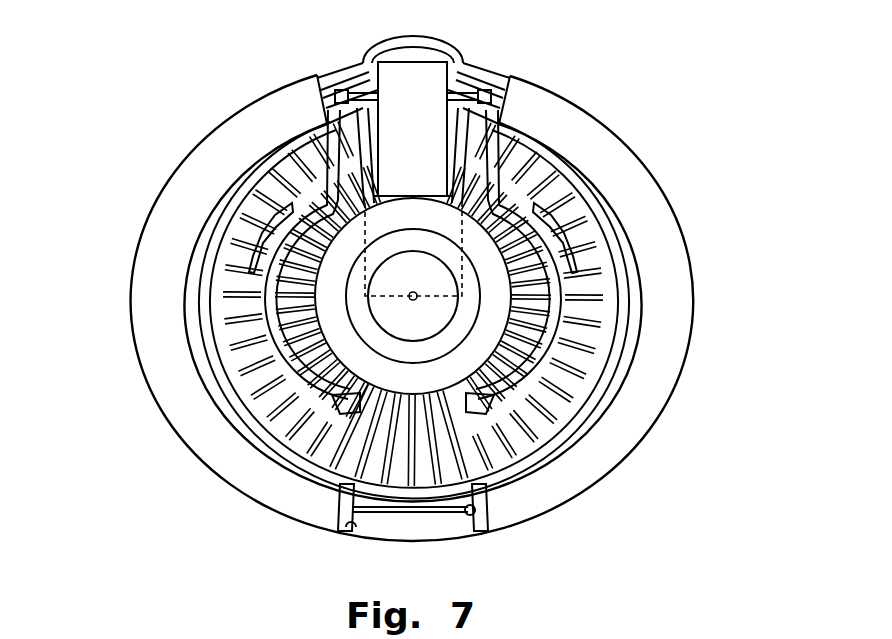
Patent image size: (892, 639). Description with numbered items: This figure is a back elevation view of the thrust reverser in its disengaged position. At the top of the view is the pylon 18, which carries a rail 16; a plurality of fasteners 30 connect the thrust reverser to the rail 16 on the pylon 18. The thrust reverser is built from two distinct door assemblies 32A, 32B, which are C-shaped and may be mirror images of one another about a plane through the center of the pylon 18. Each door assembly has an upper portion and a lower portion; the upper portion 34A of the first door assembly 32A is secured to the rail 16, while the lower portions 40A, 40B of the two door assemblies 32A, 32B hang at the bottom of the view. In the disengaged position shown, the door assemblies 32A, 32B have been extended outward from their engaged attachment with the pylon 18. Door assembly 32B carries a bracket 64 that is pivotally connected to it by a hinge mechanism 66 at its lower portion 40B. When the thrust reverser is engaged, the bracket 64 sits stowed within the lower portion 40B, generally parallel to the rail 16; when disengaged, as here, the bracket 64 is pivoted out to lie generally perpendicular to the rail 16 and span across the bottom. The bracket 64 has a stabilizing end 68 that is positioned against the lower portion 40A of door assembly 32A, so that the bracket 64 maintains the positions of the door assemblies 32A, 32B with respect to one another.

The rail 16 is at (372, 85).
The pylon 18 is at (428, 83).
The fastener 30 is at (485, 93).
The door assembly 32A is at (160, 291).
The door assembly 32B is at (676, 307).
The upper portion 34A is at (302, 103).
The lower portion 40A is at (332, 506).
The lower portion 40B is at (514, 500).
The bracket 64 is at (413, 514).
The hinge mechanism 66 is at (472, 516).
The stabilizing end 68 is at (353, 527).